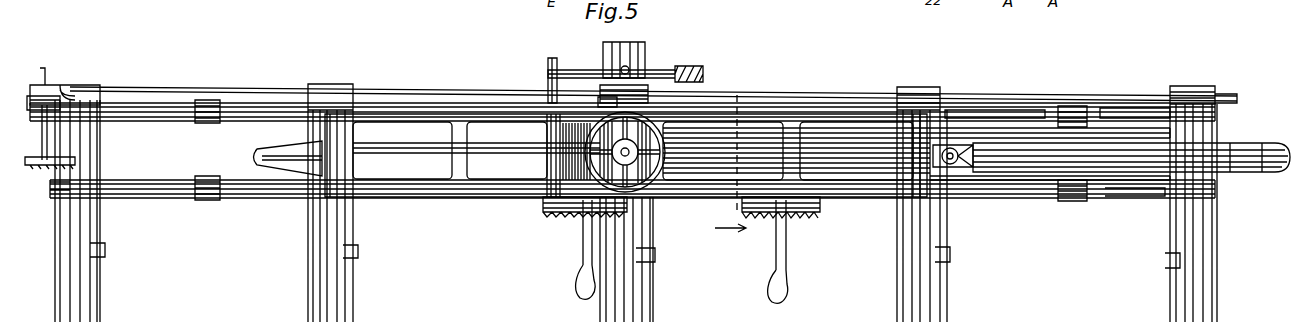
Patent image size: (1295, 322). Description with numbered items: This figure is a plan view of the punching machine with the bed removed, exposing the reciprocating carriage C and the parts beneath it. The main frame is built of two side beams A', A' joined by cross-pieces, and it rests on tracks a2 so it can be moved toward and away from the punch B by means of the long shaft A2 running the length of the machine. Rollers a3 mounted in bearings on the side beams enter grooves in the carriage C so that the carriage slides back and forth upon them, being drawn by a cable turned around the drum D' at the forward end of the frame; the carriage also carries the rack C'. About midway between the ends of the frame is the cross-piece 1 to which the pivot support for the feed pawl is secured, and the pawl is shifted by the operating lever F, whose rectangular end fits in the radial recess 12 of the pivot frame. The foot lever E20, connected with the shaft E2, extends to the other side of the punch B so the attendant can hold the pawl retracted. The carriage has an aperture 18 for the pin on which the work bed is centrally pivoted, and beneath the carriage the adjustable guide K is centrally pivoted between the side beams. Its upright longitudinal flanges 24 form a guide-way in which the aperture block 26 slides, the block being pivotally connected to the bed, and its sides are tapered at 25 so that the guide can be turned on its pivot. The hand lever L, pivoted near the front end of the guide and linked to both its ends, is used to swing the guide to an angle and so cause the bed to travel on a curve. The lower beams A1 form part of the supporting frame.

The shaft A2 is at (978, 98).
The side beam A' is at (622, 92).
The lower beam A1 is at (1147, 198).
The track a2 is at (320, 232).
The roller a3 is at (1088, 90).
The drum D' is at (62, 111).
The reciprocating carriage C is at (626, 151).
The carriage bracket C' is at (338, 158).
The flange 24 is at (865, 160).
The tapered side 25 is at (867, 126).
The aperture block 26 is at (970, 163).
The cross-piece 1 is at (547, 158).
The aperture 18 is at (621, 154).
The operating lever F is at (583, 262).
The hand lever L is at (781, 250).
The radial recess 12 is at (731, 164).
The punch B is at (631, 70).
The foot lever E20 is at (667, 72).
The shaft E2 is at (529, 52).
The adjustable guide K is at (1235, 153).